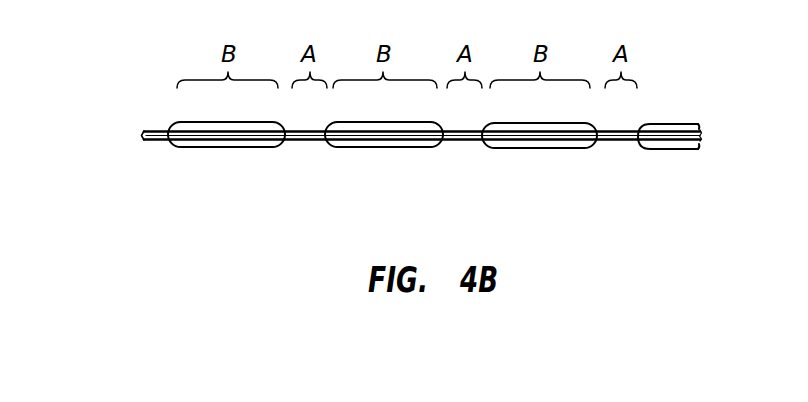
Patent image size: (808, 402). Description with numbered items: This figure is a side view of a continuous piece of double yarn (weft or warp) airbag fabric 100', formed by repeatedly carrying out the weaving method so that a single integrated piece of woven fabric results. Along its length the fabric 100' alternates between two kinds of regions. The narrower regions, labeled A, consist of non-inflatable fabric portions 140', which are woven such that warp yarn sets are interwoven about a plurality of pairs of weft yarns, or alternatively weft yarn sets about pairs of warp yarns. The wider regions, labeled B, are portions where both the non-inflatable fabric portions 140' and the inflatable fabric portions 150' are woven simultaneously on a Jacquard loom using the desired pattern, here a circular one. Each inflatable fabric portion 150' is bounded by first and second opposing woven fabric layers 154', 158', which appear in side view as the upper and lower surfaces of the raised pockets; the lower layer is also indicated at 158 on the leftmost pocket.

The airbag fabric 100' is at (459, 141).
The non-inflatable fabric portion 140' is at (422, 171).
The inflatable fabric portion 150' is at (448, 145).
The first woven fabric layer 154' is at (388, 108).
The second woven fabric layer 158' is at (455, 181).
The balloon lower surface 158 is at (215, 202).